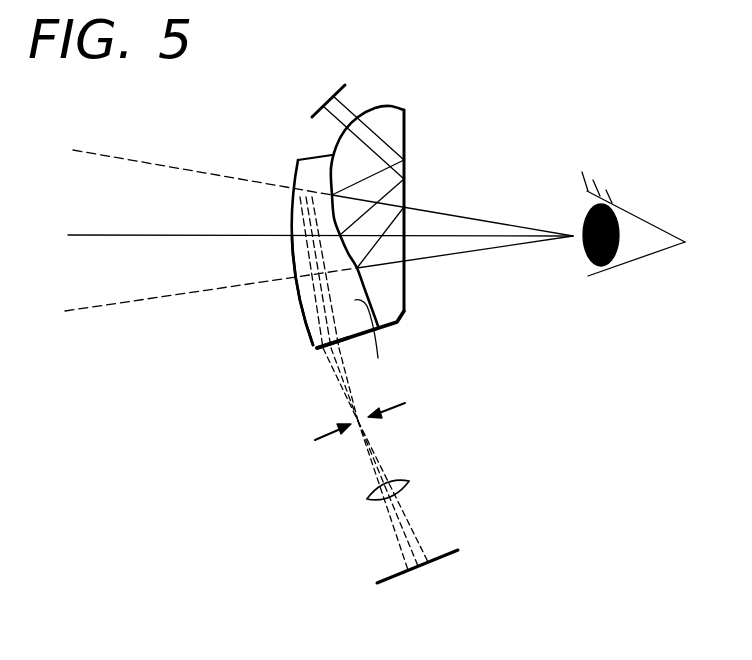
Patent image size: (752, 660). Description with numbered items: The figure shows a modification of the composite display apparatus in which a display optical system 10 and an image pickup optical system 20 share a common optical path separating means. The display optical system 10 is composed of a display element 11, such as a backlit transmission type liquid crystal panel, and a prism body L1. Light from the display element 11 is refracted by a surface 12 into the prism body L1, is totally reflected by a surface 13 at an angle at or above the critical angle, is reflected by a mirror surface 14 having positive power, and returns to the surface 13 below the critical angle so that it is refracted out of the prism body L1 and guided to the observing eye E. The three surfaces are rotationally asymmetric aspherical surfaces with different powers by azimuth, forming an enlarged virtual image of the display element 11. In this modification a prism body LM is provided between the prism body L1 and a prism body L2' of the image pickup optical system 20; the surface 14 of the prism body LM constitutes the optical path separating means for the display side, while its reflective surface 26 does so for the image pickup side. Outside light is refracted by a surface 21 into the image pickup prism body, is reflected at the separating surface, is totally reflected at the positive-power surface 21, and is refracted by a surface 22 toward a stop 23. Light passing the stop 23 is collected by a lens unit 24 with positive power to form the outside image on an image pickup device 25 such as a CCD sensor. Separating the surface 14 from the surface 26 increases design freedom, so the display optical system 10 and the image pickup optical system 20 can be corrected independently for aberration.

The display optical system 10 is at (415, 198).
The display element 11 is at (336, 84).
The surface 12 is at (385, 105).
The surface 13 is at (406, 135).
The mirror surface 14 is at (383, 298).
The prism body L1 is at (408, 202).
The prism body L2' is at (248, 290).
The prism body LM is at (395, 322).
The image pickup optical system 20 is at (353, 465).
The surface 21 is at (311, 344).
The surface 22 is at (322, 357).
The stop 23 is at (392, 411).
The lens unit 24 is at (410, 485).
The image pickup device 25 is at (448, 543).
The reflective surface 26 is at (375, 342).
The observing eye E is at (634, 260).